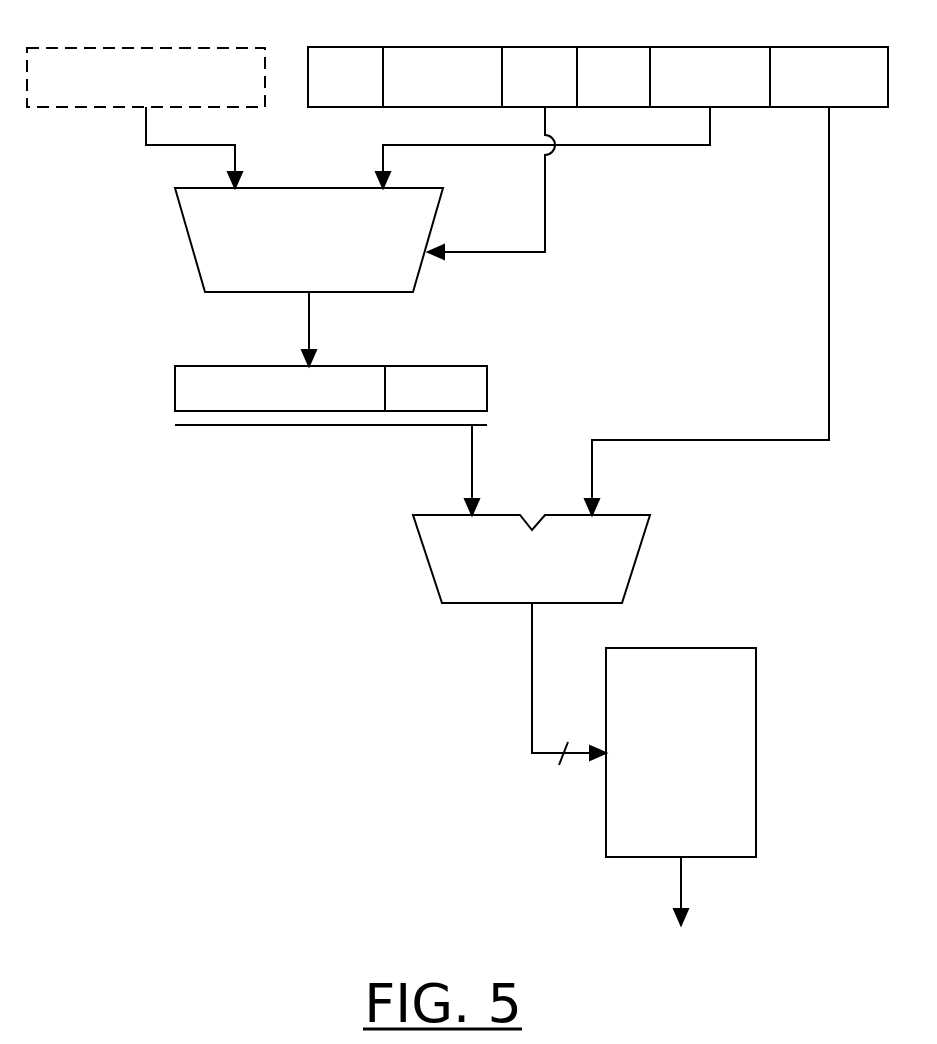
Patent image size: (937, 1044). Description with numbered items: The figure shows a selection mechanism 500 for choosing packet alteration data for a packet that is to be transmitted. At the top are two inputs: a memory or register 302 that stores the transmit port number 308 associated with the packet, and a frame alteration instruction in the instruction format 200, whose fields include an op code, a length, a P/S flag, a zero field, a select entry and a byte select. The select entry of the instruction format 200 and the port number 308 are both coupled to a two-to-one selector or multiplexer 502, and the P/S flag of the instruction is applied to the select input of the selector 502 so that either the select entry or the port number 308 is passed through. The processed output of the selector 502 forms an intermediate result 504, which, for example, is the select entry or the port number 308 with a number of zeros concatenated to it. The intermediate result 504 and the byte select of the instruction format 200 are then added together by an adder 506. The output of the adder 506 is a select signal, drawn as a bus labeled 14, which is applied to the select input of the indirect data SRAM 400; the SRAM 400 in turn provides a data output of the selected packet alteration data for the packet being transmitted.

The memory or register 302 is at (96, 39).
The transmit port number 308 is at (145, 78).
The instruction format 200 is at (313, 39).
The selection mechanism 500 is at (62, 272).
The 2:1 selector or multiplexer 502 is at (309, 240).
The intermediate results 504 is at (185, 362).
The adder 506 is at (531, 559).
The select bus width 14 is at (569, 739).
The indirect data SRAM 400 is at (659, 791).